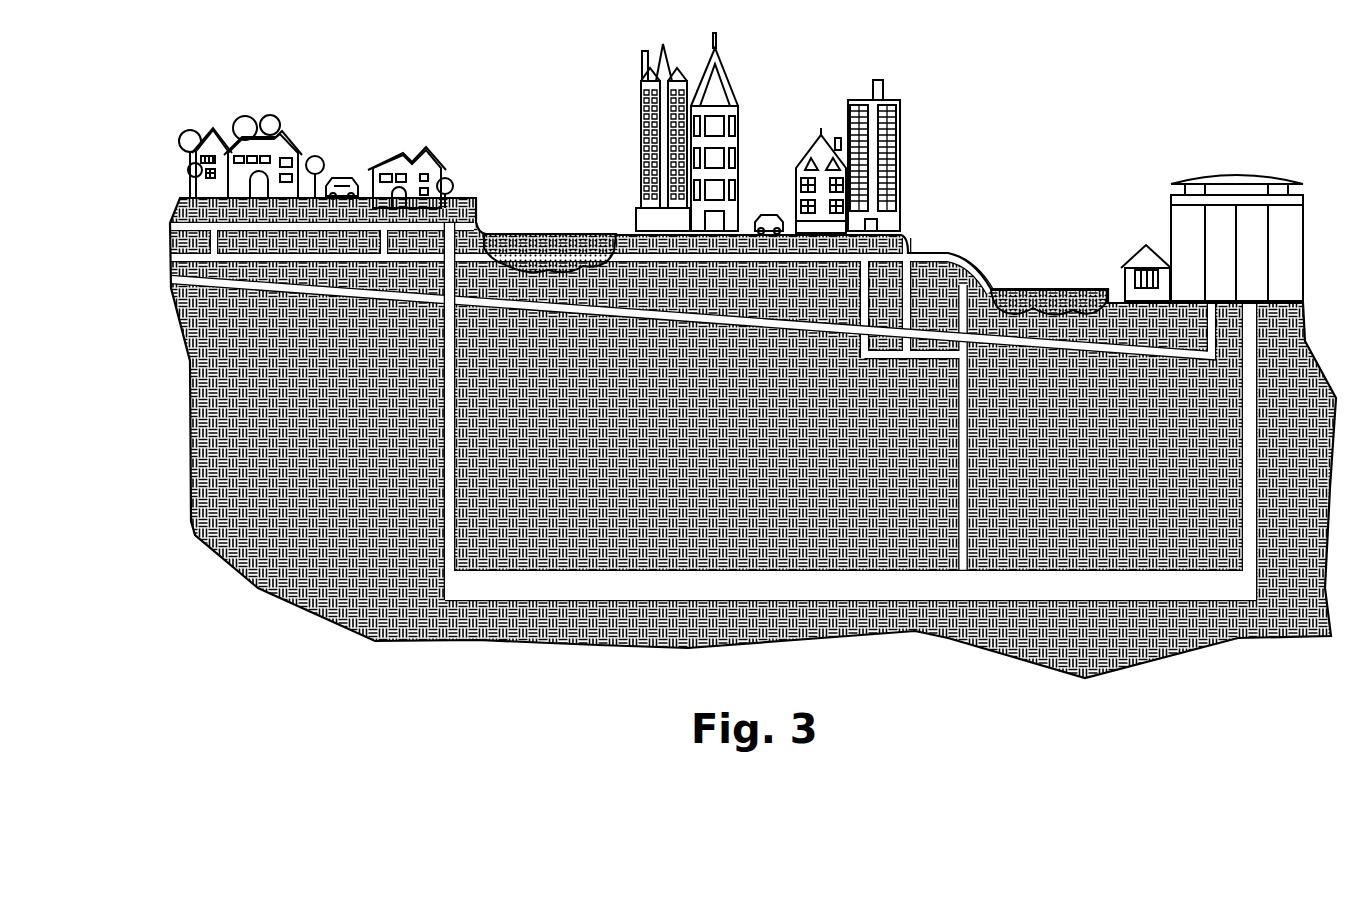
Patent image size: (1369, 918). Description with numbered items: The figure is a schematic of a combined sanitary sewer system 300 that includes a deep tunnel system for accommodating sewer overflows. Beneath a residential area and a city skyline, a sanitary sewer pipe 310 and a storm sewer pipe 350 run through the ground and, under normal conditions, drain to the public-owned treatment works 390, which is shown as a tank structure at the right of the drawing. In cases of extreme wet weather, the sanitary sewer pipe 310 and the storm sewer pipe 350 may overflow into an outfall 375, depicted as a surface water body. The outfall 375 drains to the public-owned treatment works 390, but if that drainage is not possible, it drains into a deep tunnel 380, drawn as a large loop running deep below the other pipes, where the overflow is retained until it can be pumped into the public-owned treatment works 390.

The combined sanitary sewer system 300 is at (515, 138).
The sanitary sewer pipe 310 is at (163, 215).
The storm sewer pipe 350 is at (172, 268).
The outfall 375 is at (533, 226).
The deep tunnel 380 is at (530, 576).
The public-owned treatment works 390 is at (1178, 214).